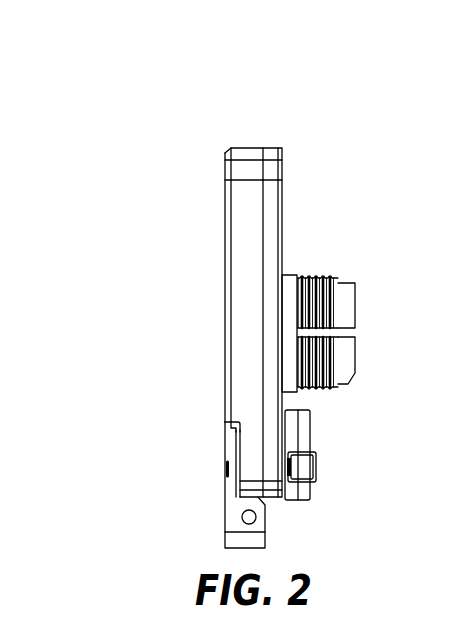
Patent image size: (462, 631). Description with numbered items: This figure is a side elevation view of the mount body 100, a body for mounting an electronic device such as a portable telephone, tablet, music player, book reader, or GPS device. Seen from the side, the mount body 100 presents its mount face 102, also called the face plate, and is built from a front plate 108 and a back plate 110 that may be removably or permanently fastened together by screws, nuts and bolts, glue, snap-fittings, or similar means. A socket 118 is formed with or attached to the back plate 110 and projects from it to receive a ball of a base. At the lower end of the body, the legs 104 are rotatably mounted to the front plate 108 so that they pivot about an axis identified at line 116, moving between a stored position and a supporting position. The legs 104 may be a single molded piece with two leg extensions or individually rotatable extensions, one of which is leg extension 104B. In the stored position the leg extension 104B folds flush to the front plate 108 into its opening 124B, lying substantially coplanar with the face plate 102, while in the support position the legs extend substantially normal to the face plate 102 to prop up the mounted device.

The mount body 100 is at (150, 203).
The mount face 102 is at (215, 370).
The legs 104 is at (224, 517).
The leg extension 104B is at (237, 447).
The front plate 108 is at (245, 147).
The back plate 110 is at (270, 147).
The axis line 116 is at (256, 517).
The socket 118 is at (345, 290).
The opening 124B is at (225, 420).